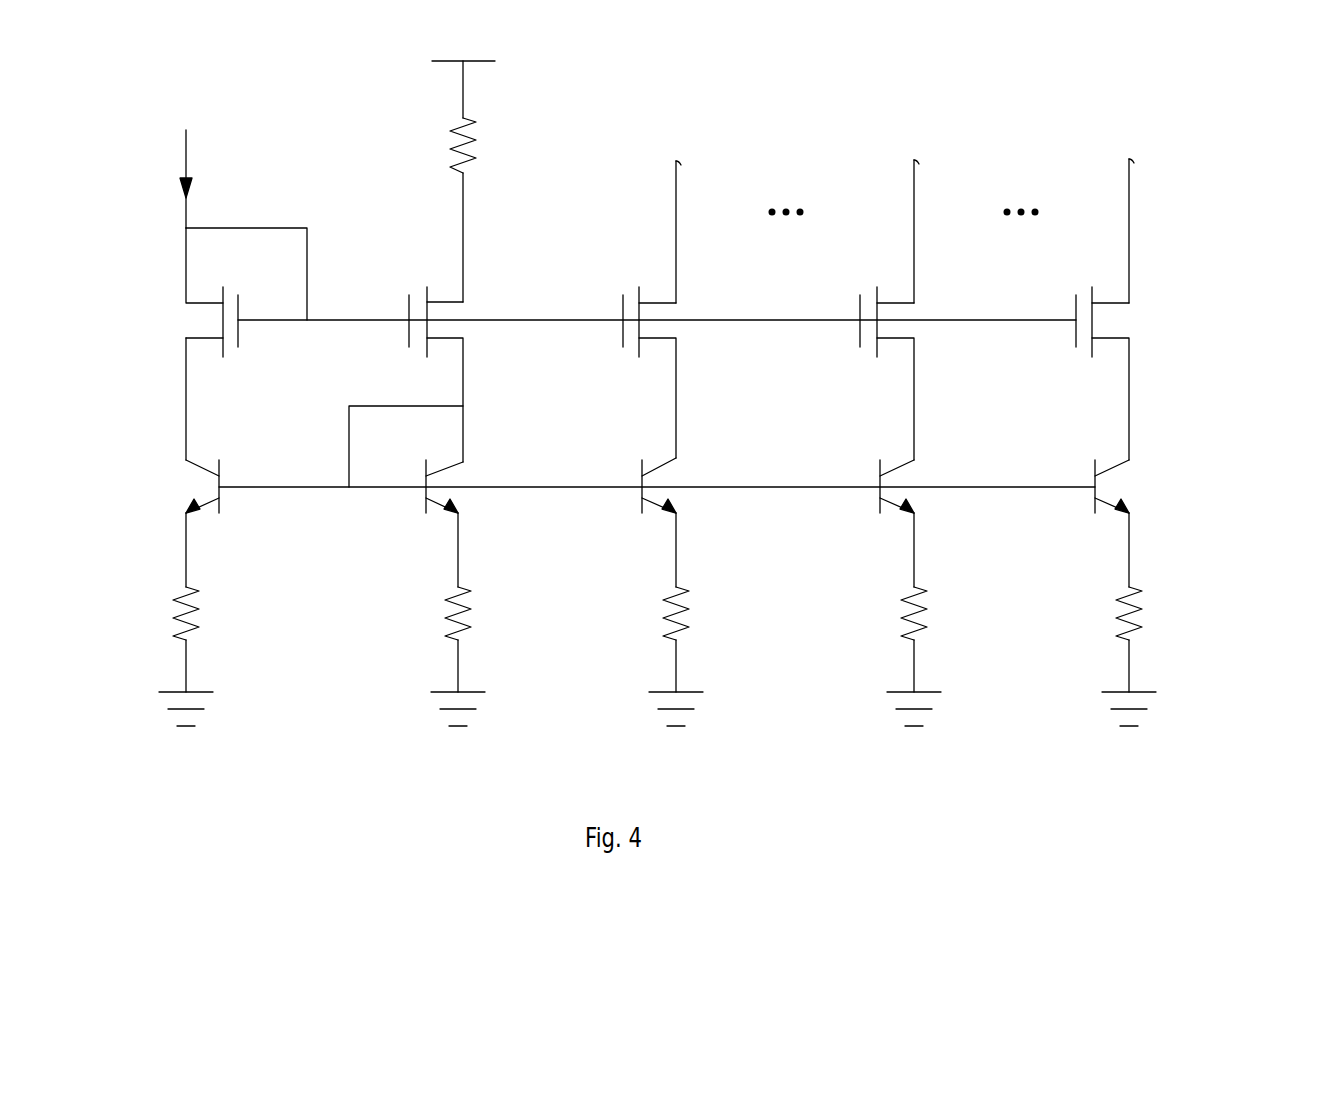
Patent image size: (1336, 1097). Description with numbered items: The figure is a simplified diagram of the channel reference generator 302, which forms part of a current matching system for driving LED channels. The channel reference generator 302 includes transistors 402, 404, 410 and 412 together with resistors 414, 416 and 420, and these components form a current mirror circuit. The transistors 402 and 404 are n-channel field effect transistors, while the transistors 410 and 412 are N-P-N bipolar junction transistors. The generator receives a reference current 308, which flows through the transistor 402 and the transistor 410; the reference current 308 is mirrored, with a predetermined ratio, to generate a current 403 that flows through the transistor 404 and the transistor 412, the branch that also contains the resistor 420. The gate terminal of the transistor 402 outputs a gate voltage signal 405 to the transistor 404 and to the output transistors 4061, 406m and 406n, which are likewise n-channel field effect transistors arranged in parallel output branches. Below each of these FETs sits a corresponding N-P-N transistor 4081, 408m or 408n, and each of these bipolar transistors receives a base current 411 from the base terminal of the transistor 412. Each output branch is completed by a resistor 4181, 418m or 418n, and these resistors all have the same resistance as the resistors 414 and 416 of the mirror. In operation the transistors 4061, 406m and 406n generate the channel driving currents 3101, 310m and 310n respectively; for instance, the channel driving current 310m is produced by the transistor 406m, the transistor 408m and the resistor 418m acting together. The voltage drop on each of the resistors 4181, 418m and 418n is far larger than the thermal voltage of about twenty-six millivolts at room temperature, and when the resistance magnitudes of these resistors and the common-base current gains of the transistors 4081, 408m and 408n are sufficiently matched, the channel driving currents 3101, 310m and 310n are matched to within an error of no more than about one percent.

The channel reference generator 302 is at (1207, 688).
The reference current 308 is at (186, 158).
The channel driving current 3101 is at (679, 183).
The channel driving current 310m is at (915, 171).
The channel driving current 310n is at (1132, 170).
The transistor 402 is at (200, 310).
The current 403 is at (463, 231).
The transistor 404 is at (452, 318).
The gate voltage signal 405 is at (382, 320).
The transistor 4061 is at (666, 313).
The transistor 406m is at (904, 313).
The transistor 406n is at (1107, 323).
The transistor 4081 is at (664, 474).
The transistor 408m is at (904, 476).
The transistor 408n is at (1125, 490).
The transistor 410 is at (190, 478).
The base current 411 is at (427, 476).
The transistor 412 is at (452, 477).
The resistor 414 is at (178, 614).
The resistor 416 is at (448, 620).
The resistor 4181 is at (668, 626).
The resistor 418m is at (903, 620).
The resistor 418n is at (1125, 620).
The resistor 420 is at (470, 151).